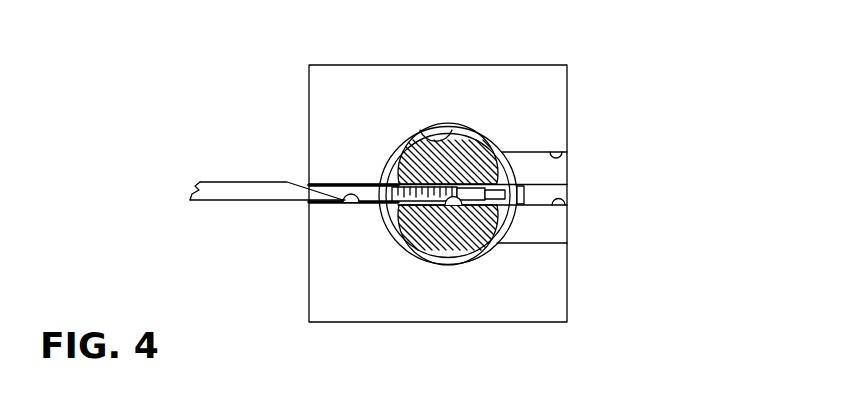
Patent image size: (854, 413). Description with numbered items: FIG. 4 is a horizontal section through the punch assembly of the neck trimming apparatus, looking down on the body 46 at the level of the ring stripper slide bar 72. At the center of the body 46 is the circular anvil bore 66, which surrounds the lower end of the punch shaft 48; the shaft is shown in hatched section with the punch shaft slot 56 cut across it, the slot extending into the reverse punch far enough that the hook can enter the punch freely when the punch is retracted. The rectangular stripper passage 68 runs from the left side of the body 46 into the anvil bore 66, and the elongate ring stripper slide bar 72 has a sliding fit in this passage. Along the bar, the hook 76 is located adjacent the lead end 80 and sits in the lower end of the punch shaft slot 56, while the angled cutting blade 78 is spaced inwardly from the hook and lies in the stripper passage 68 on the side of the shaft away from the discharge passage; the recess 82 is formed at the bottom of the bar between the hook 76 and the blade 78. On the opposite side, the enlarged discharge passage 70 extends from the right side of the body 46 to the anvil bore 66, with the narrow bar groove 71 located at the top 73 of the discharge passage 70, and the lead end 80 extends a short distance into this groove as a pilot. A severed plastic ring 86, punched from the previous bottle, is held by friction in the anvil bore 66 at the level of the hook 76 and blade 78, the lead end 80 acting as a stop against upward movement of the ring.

The body 46 is at (308, 75).
The punch shaft 48 is at (423, 152).
The punch shaft slot 56 is at (439, 206).
The anvil bore 66 is at (453, 128).
The stripper passage 68 is at (310, 184).
The discharge passage 70 is at (568, 157).
The bar groove 71 is at (568, 198).
The ring stripper slide bar 72 is at (248, 202).
The top of discharge passage 73 is at (550, 222).
The hook 76 is at (488, 200).
The cutting blade 78 is at (366, 205).
The lead end 80 is at (524, 193).
The recess 82 is at (362, 183).
The severed ring 86 is at (522, 173).